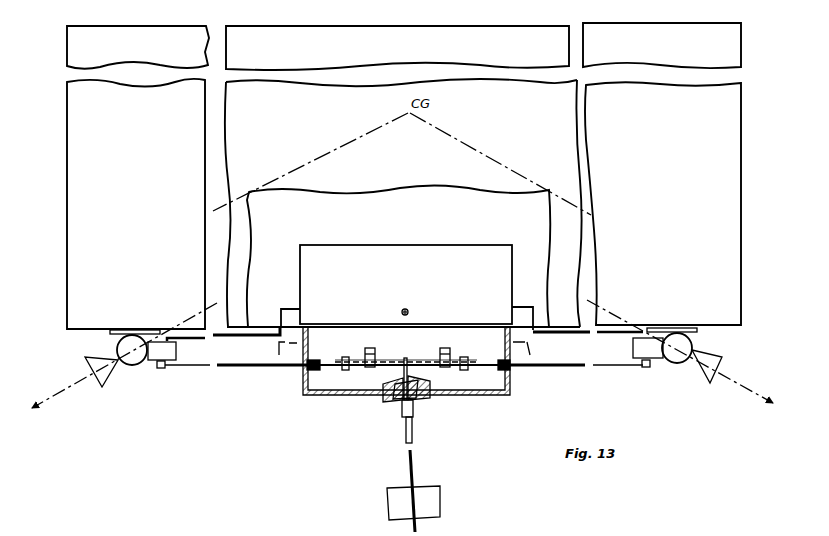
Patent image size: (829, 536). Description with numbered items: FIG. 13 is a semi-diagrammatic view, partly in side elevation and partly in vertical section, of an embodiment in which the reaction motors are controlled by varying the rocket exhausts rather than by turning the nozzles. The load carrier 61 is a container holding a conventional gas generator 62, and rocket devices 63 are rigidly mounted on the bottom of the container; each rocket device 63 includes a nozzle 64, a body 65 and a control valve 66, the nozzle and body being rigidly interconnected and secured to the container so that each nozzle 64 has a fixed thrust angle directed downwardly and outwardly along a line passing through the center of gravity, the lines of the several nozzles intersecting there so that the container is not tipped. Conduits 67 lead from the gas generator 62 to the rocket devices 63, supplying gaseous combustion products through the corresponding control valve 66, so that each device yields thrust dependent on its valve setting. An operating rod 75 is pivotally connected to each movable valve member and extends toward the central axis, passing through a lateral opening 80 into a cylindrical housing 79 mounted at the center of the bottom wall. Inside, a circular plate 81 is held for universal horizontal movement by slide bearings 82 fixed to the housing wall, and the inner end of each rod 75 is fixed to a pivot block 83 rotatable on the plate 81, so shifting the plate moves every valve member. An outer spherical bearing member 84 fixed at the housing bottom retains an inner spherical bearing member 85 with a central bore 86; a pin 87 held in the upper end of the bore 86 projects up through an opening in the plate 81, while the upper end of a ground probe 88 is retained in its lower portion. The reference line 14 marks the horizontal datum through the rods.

The reference axis 14 is at (402, 351).
The load carrier 61 is at (66, 233).
The gas generator 62 is at (452, 245).
The rocket device 63 is at (115, 347).
The nozzle 64 is at (85, 358).
The body 65 is at (121, 366).
The control valve 66 is at (176, 352).
The conduit 67 is at (247, 337).
The operating rod 75 is at (255, 369).
The cylindrical housing 79 is at (508, 388).
The lateral opening 80 is at (313, 360).
The circular plate 81 is at (415, 361).
The slide bearing 82 is at (375, 357).
The pivot block 83 is at (347, 370).
The outer spherical bearing member 84 is at (395, 398).
The inner spherical bearing member 85 is at (400, 406).
The central bore 86 is at (413, 393).
The pin 87 is at (402, 366).
The ground probe 88 is at (413, 425).